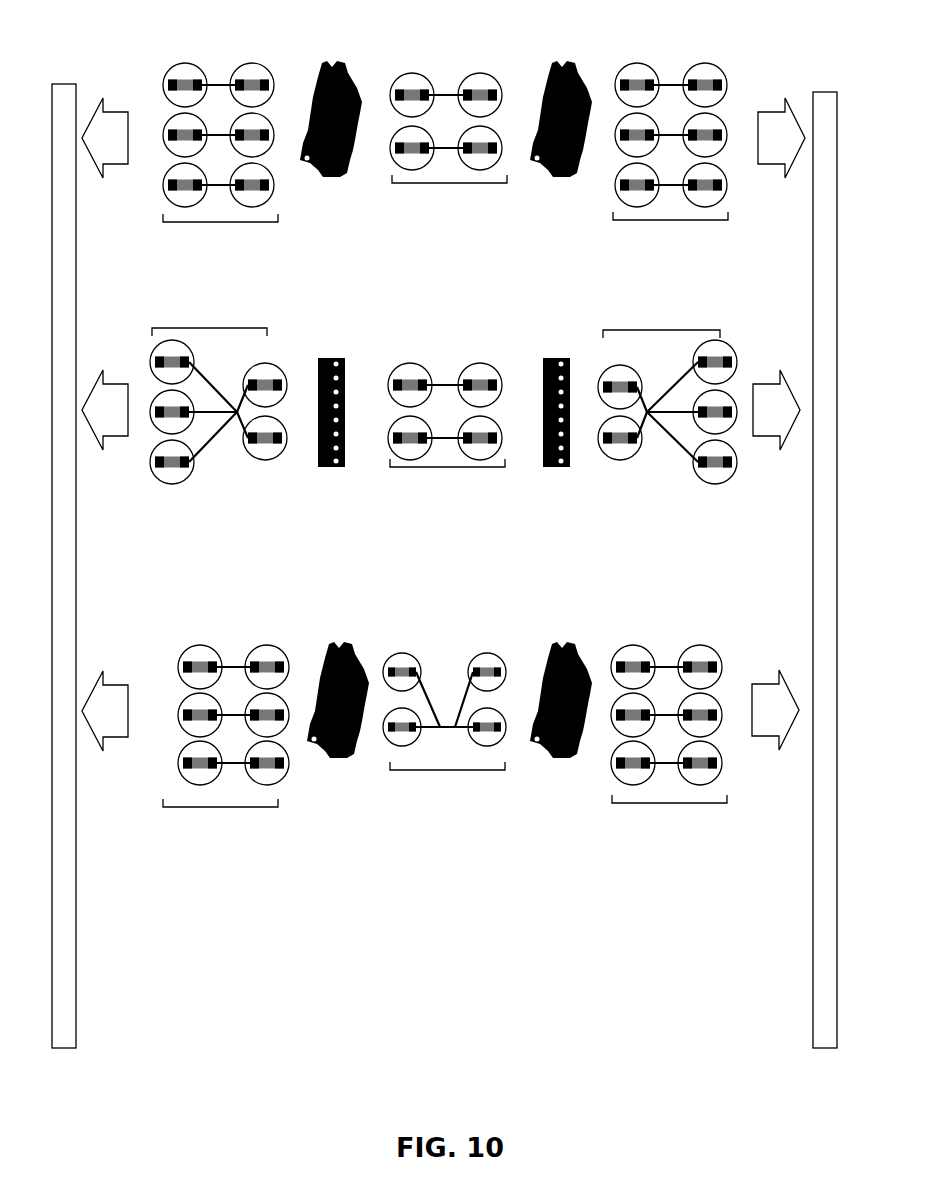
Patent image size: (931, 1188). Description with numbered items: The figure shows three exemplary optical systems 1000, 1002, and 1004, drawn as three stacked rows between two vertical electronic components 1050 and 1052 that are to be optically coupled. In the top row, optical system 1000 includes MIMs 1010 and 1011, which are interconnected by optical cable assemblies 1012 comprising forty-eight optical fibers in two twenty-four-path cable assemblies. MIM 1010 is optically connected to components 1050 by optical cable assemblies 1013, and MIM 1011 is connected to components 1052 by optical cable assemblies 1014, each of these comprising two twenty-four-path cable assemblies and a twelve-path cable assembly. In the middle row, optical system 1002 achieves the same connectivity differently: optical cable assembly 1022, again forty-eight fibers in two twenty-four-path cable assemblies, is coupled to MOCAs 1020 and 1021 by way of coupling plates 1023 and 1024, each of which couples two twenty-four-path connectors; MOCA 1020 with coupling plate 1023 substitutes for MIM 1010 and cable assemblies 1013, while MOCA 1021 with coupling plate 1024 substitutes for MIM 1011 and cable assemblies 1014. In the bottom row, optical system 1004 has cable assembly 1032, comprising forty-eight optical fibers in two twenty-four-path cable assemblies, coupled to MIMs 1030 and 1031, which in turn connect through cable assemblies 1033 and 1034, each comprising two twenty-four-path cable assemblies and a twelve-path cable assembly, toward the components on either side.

The optical system 1000 is at (385, 141).
The optical system 1002 is at (441, 413).
The optical system 1004 is at (415, 701).
The MIM 1010 is at (320, 62).
The MIM 1011 is at (550, 62).
The optical cable assemblies 1012 is at (448, 186).
The optical cable assemblies 1013 is at (222, 224).
The optical cable assemblies 1014 is at (673, 222).
The MOCA 1020 is at (212, 327).
The MOCA 1021 is at (661, 328).
The optical cable assembly 1022 is at (448, 468).
The coupling plate 1023 is at (322, 466).
The coupling plate 1024 is at (550, 466).
The MIM 1030 is at (326, 644).
The MIM 1031 is at (552, 644).
The cable assembly 1032 is at (448, 772).
The cable assemblies 1033 is at (220, 808).
The cable assemblies 1034 is at (673, 805).
The components 1050 is at (63, 566).
The components 1052 is at (825, 570).